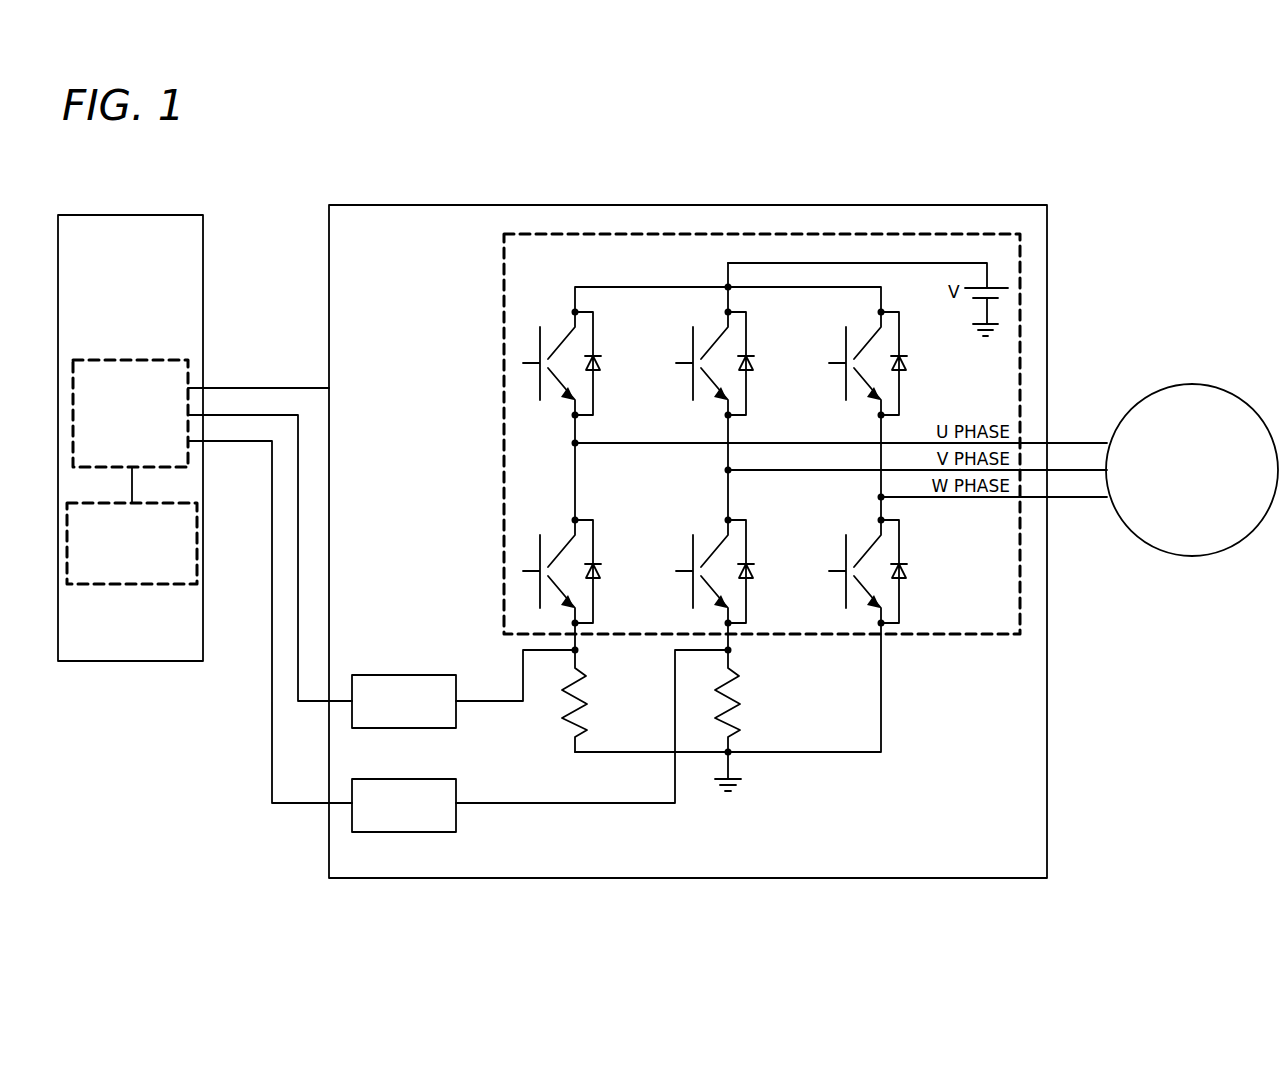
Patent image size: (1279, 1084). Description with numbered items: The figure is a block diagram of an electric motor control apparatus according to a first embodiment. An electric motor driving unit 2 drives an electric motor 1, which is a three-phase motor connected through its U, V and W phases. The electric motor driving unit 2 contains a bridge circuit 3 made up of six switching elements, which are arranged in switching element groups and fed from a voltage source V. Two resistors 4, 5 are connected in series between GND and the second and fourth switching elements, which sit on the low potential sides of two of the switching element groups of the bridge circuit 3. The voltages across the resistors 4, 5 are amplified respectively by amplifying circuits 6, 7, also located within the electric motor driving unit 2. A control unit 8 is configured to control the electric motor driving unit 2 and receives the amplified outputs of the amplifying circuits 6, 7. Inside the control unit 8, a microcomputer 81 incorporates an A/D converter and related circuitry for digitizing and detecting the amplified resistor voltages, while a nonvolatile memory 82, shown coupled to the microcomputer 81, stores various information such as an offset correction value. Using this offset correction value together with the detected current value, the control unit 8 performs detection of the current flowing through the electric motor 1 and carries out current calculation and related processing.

The electric motor 1 is at (1166, 386).
The electric motor driving unit 2 is at (684, 206).
The bridge circuit 3 is at (504, 333).
The resistor 4 is at (590, 700).
The resistor 5 is at (744, 710).
The amplifying circuit 6 is at (427, 675).
The amplifying circuit 7 is at (427, 779).
The control unit 8 is at (128, 216).
The microcomputer 81 is at (142, 361).
The nonvolatile memory 82 is at (139, 584).